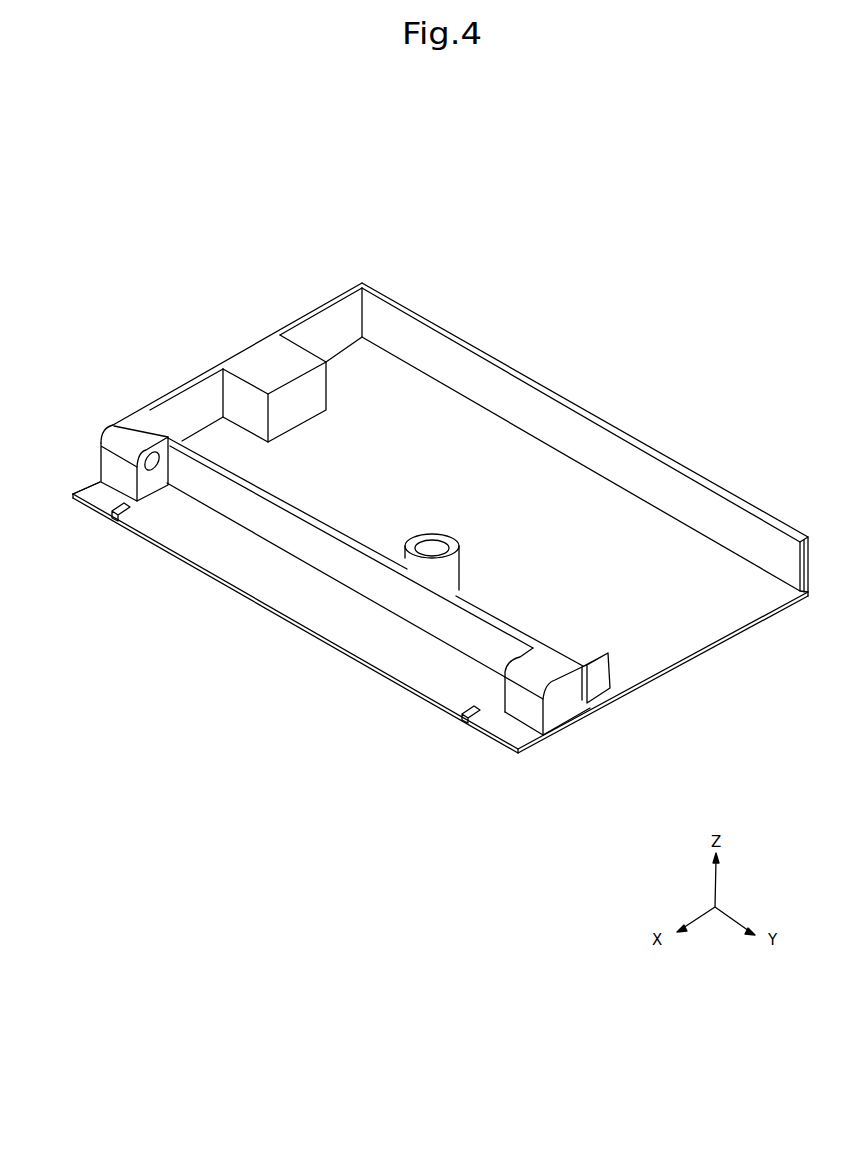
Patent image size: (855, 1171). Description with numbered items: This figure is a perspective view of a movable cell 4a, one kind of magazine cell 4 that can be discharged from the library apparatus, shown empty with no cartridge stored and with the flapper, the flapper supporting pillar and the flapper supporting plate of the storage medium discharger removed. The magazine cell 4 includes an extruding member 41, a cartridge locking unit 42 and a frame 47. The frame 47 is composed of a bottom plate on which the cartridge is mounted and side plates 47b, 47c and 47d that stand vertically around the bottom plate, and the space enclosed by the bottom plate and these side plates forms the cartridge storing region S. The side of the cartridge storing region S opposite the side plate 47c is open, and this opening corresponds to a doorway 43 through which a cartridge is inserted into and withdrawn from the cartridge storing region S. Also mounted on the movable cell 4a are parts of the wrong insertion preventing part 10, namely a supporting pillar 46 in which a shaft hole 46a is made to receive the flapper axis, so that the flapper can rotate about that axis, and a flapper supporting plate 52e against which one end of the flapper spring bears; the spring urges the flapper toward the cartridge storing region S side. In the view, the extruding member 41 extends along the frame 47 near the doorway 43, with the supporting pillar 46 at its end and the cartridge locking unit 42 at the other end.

The movable cell 4a is at (482, 267).
The magazine cell 4 is at (434, 502).
The side plate 47c is at (324, 304).
The side plate 47b is at (686, 469).
The side plate 47d is at (470, 600).
The frame 47 is at (460, 507).
The supporting pillar 46 is at (144, 423).
The shaft hole 46a is at (152, 468).
The wrong insertion preventing part 10 is at (335, 590).
The extruding member 41 is at (362, 578).
The flapper supporting plate 52e is at (378, 643).
The cartridge locking unit 42 is at (597, 678).
The doorway 43 is at (702, 631).
The cartridge storing region S is at (478, 444).